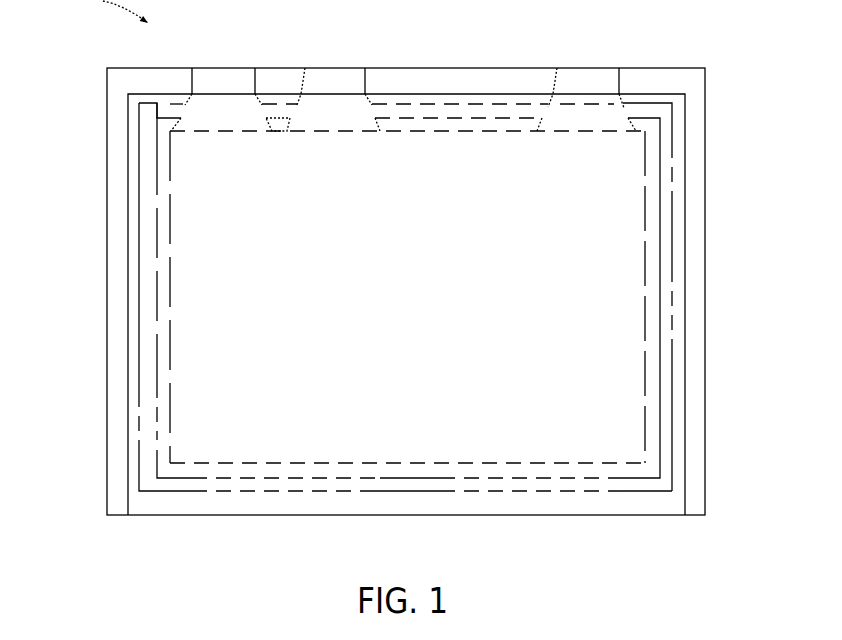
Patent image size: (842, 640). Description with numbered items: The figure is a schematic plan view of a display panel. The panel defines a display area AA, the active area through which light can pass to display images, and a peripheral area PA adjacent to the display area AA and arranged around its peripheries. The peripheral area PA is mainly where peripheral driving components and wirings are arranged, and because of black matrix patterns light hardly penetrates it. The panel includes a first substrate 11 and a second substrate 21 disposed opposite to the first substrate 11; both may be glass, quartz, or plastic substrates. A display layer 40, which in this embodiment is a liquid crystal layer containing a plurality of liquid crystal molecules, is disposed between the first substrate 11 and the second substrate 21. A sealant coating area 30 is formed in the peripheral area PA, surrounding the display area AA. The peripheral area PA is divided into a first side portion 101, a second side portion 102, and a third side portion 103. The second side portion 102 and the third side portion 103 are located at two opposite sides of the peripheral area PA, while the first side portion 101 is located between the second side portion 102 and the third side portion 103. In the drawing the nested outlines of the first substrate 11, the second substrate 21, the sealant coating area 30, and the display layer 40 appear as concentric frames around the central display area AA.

The first substrate 11 is at (625, 515).
The second substrate 21 is at (640, 93).
The first side portion 101 is at (138, 357).
The peripheral area PA is at (688, 140).
The display area AA is at (662, 202).
The display layer 40 is at (643, 373).
The second side portion 102 is at (327, 88).
The sealant coating area 30 is at (457, 104).
The third side portion 103 is at (330, 493).